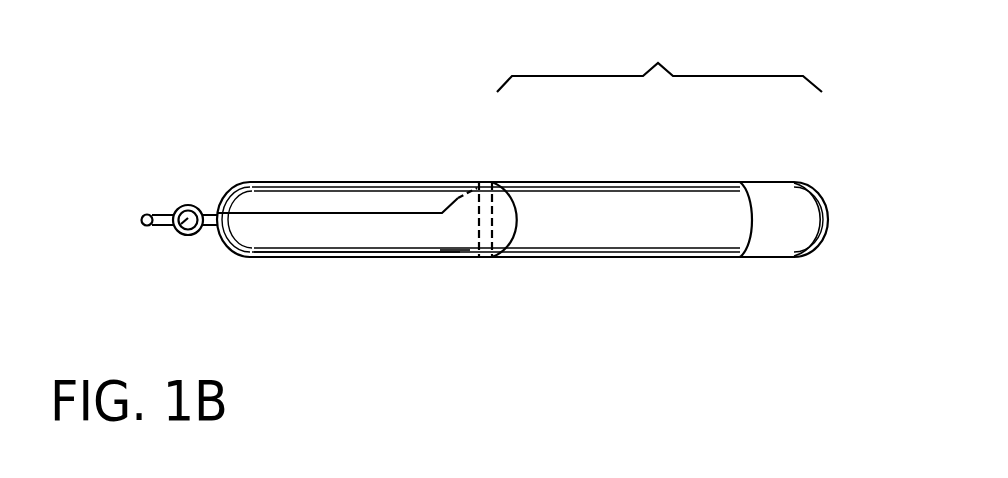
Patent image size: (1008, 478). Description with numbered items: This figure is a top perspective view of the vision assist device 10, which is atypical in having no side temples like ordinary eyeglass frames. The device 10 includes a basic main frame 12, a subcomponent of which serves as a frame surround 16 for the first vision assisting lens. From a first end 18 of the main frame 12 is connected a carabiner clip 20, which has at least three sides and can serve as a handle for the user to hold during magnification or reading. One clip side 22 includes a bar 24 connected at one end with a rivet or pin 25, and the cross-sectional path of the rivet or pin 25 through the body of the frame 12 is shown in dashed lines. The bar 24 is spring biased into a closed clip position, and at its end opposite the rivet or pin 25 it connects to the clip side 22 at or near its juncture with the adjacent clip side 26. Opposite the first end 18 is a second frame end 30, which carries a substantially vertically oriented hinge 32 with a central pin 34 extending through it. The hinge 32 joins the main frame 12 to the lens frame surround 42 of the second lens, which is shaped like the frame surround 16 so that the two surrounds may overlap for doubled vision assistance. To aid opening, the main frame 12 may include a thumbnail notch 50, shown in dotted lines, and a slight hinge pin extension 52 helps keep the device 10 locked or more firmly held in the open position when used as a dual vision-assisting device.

The vision assist device 10 is at (599, 287).
The main frame 12 is at (683, 257).
The frame surround 16 is at (295, 240).
The first end 18 is at (456, 247).
The carabiner clip 20 is at (659, 55).
The clip side 22 is at (515, 200).
The bar 24 is at (637, 200).
The rivet or pin 25 is at (486, 256).
The adjacent clip side 26 is at (783, 244).
The second frame end 30 is at (208, 232).
The hinge 32 is at (177, 207).
The central pin 34 is at (175, 232).
The lens frame surround 42 is at (302, 192).
The thumbnail notch 50 is at (475, 187).
The hinge pin extension 52 is at (141, 217).